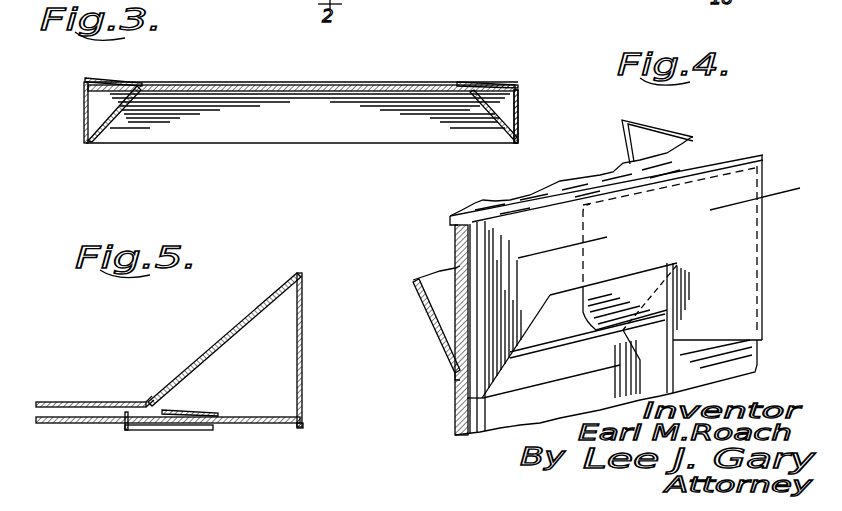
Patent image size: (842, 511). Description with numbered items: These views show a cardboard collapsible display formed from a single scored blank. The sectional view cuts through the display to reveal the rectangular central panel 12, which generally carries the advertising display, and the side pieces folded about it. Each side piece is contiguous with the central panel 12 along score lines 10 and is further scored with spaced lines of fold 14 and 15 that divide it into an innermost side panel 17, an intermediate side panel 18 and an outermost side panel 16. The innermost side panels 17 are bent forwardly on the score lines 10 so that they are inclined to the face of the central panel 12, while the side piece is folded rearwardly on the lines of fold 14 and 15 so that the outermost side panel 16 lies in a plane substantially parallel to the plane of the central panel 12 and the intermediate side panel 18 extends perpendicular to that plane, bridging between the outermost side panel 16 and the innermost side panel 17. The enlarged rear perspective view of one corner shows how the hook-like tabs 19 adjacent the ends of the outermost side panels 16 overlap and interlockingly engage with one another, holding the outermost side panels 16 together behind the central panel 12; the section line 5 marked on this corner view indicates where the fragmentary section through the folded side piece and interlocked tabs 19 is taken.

In FIG. 4, the section line 5— 5 is at (534, 269).
In FIG. 5, the score lines 10 is at (147, 400).
In FIG. 3, the central panel 12 is at (327, 92).
In FIG. 5, the central panel 12 is at (70, 402).
In FIG. 4, the central panel 12 is at (510, 410).
In FIG. 5, the line of fold 14 is at (302, 273).
In FIG. 5, the line of fold 15 is at (304, 424).
In FIG. 3, the outermost side panel 16 is at (84, 98).
In FIG. 5, the outermost side panel 16 is at (252, 417).
In FIG. 4, the outermost side panel 16 is at (462, 249).
In FIG. 3, the innermost side panel 17 is at (112, 122).
In FIG. 5, the innermost side panel 17 is at (232, 328).
In FIG. 4, the innermost side panel 17 is at (620, 150).
In FIG. 3, the intermediate side panel 18 is at (520, 128).
In FIG. 5, the intermediate side panel 18 is at (303, 345).
In FIG. 4, the intermediate side panel 18 is at (655, 128).
In FIG. 3, the hook-like tabs 19 is at (112, 80).
In FIG. 5, the hook-like tabs 19 is at (170, 412).
In FIG. 4, the hook-like tabs 19 is at (582, 318).